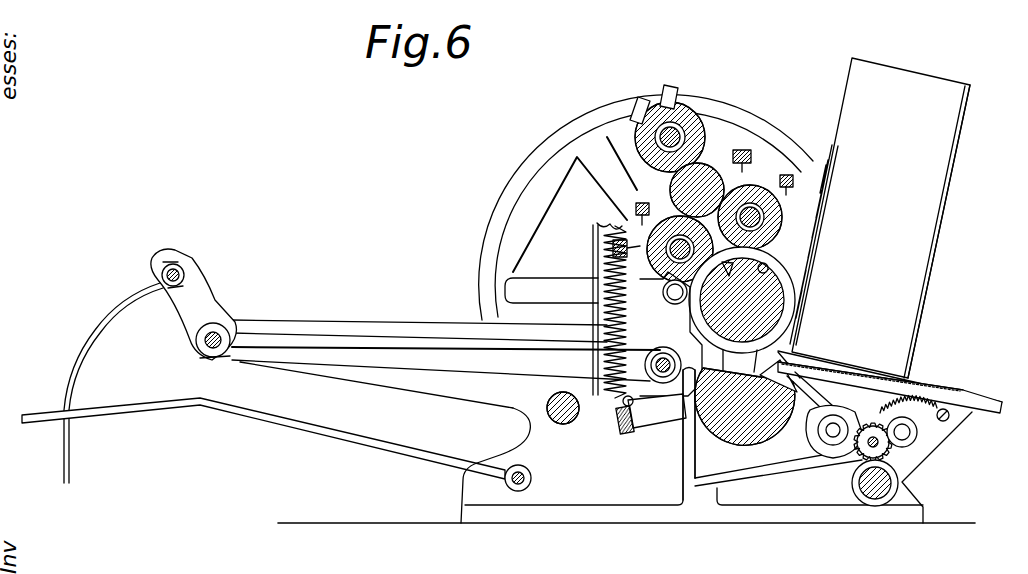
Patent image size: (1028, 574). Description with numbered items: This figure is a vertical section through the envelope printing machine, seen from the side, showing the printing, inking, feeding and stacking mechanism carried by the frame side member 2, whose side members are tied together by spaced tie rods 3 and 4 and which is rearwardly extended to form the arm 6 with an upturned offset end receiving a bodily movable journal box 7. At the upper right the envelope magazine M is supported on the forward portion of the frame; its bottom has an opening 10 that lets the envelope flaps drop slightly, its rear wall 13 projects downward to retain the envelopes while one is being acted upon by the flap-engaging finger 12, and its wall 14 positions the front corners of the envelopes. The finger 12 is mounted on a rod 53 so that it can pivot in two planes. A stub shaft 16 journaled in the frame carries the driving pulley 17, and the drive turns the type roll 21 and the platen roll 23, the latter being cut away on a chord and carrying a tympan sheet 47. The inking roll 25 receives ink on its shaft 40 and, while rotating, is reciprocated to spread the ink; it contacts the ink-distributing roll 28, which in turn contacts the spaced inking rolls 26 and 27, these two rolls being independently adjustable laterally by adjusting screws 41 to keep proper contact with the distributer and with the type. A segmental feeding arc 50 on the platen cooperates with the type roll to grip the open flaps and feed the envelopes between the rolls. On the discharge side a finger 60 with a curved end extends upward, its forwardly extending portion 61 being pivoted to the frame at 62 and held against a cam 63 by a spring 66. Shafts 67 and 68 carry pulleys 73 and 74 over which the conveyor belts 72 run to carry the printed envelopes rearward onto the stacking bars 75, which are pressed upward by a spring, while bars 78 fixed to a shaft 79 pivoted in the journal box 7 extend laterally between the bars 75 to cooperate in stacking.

The side member 2 is at (473, 495).
The tie rod 3 is at (570, 416).
The tie rod 4 is at (898, 488).
The arm 6 is at (322, 378).
The journal box 7 is at (190, 292).
The opening 10 is at (800, 357).
The finger 12 is at (813, 367).
The rear wall 13 is at (806, 263).
The wall 14 is at (920, 322).
The stub shaft 16 is at (672, 304).
The driving pulley 17 is at (520, 175).
The type roll 21 is at (785, 297).
The platen roll 23 is at (747, 433).
The inking roll 25 is at (638, 122).
The inking roll 26 is at (662, 214).
The inking roll 27 is at (756, 195).
The ink-distributing roll 28 is at (713, 162).
The shaft 40 is at (677, 123).
The adjusting screw 41 is at (744, 150).
The tympan sheet 47 is at (762, 430).
The segmental feeding arc 50 is at (790, 388).
The rod 53 is at (884, 450).
The finger 60 is at (688, 447).
The finger portion 61 is at (800, 472).
The pivot 62 is at (905, 434).
The cam 63 is at (830, 450).
The spring 66 is at (930, 416).
The shaft 67 is at (680, 352).
The shaft 68 is at (221, 332).
The conveyor belt 72 is at (351, 327).
The pulley 73 is at (678, 361).
The pulley 74 is at (207, 353).
The stacking bar 75 is at (408, 452).
The bar 78 is at (93, 326).
The shaft 79 is at (173, 266).
The envelope magazine M is at (929, 270).